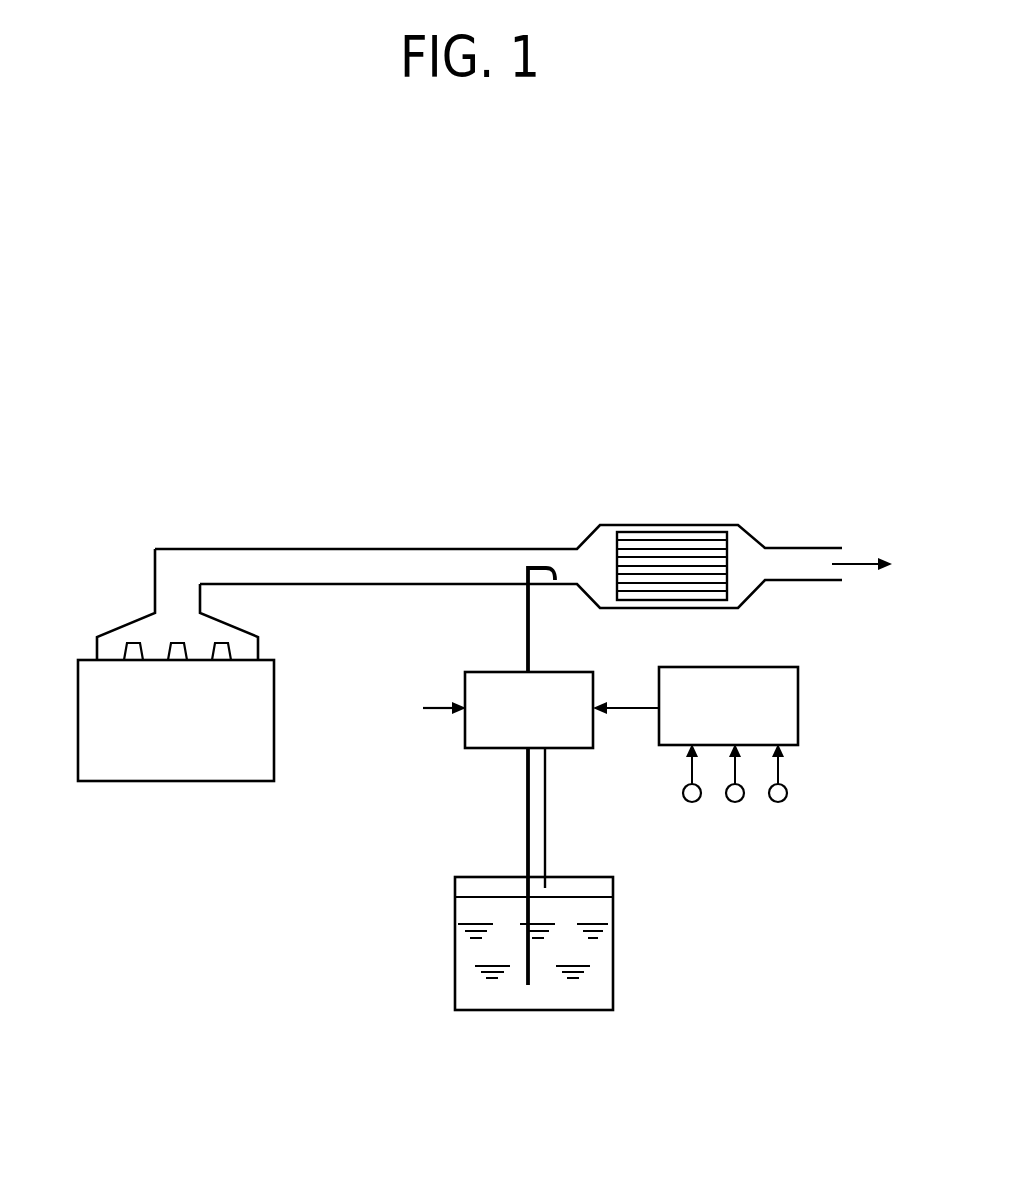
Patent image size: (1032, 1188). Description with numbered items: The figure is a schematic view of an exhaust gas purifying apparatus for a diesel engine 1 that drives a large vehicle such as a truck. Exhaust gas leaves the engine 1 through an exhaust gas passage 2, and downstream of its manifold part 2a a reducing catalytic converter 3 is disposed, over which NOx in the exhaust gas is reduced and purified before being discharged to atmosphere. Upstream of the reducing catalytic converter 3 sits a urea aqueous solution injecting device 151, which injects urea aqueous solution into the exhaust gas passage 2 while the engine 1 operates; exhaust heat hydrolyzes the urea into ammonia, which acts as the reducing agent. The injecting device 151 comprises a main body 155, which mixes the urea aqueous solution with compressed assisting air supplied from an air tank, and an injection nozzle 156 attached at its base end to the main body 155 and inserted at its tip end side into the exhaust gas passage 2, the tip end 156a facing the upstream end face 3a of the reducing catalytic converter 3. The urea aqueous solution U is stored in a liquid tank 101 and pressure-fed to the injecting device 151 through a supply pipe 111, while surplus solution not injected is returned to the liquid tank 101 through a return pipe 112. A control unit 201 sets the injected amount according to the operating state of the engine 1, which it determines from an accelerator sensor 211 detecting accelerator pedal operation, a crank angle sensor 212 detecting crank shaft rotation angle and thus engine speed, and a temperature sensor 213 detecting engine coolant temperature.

The engine 1 is at (77, 681).
The exhaust gas passage 2 is at (440, 548).
The manifold part 2a is at (131, 621).
The reducing catalytic converter 3 is at (680, 531).
The end face 3a is at (617, 553).
The liquid tank 101 is at (613, 940).
The urea aqueous solution supply pipe 111 is at (527, 800).
The return pipe 112 is at (548, 795).
The urea aqueous solution injecting device 151 is at (424, 808).
The main body 155 is at (594, 687).
The injection nozzle 156 is at (523, 607).
The tip end 156a is at (555, 581).
The control unit 201 is at (799, 687).
The accelerator sensor 211 is at (692, 802).
The crank angle sensor 212 is at (735, 802).
The temperature sensor 213 is at (778, 802).
The urea solution U is at (580, 897).